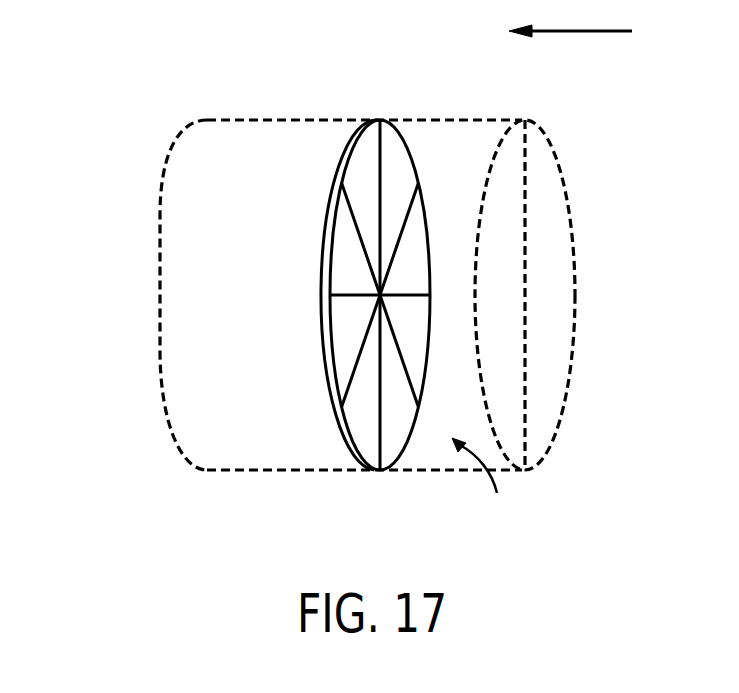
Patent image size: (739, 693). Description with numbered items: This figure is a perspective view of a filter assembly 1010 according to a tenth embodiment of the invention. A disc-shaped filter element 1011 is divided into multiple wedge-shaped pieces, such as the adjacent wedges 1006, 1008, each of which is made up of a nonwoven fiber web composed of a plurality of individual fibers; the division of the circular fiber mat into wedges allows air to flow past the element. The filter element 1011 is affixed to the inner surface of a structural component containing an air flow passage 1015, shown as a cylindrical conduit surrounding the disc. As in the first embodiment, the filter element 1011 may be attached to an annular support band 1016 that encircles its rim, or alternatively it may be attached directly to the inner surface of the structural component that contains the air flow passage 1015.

The wedge 1006 is at (362, 440).
The wedge 1008 is at (392, 433).
The filter assembly 1010 is at (485, 482).
The filter element 1011 is at (323, 363).
The air flow passage 1015 is at (157, 303).
The annular support band 1016 is at (343, 170).